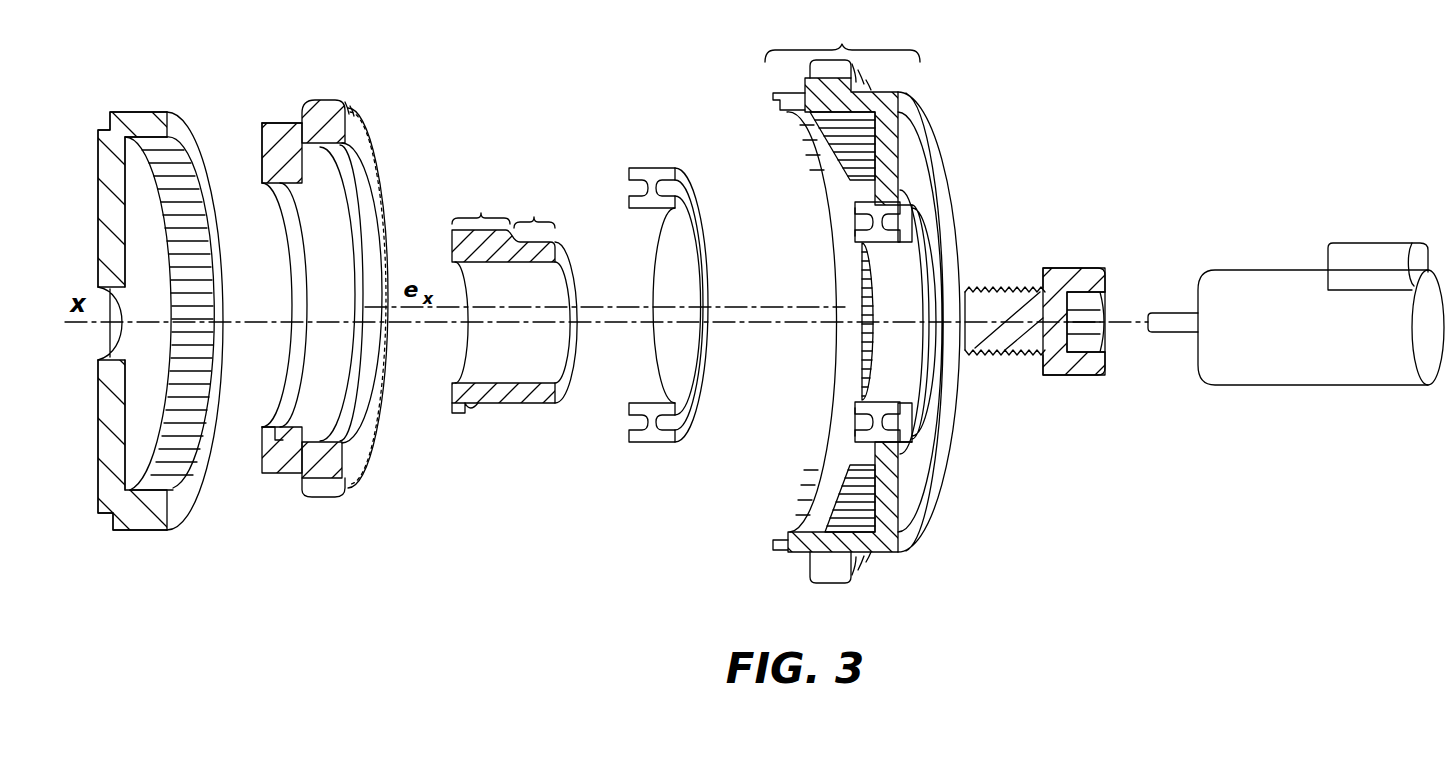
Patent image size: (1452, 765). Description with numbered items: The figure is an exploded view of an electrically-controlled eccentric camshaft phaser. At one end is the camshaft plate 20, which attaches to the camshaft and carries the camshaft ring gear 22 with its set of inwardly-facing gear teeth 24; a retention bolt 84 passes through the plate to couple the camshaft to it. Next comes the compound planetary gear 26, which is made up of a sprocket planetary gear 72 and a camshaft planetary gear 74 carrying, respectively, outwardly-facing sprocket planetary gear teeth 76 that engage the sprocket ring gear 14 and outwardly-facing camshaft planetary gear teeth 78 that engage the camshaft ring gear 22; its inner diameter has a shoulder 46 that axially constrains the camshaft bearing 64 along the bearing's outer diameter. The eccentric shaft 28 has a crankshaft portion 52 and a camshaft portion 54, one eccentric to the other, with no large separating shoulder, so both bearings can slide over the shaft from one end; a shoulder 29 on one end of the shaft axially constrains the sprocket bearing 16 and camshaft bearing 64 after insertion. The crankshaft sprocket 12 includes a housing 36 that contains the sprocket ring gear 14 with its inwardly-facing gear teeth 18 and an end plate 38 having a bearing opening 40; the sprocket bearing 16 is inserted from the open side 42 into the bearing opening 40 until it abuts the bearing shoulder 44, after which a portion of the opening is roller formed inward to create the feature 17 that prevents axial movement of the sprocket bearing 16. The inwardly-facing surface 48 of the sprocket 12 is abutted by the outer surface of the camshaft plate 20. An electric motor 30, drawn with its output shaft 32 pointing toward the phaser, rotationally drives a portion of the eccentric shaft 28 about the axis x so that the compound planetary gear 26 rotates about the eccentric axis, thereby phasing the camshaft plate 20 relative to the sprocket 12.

The crankshaft sprocket 12 is at (873, 572).
The sprocket ring gear 14 is at (838, 510).
The sprocket bearing 16 is at (857, 233).
The feature 17 is at (850, 212).
The inwardly-facing gear teeth 18 is at (858, 152).
The camshaft plate 20 is at (142, 112).
The camshaft ring gear 22 is at (189, 470).
The inwardly-facing gear teeth 24 is at (177, 185).
The compound planetary gear 26 is at (300, 106).
The eccentric shaft 28 is at (512, 208).
The shoulder 29 is at (463, 410).
The electric motor 30 is at (1312, 385).
The motor shaft 32 is at (1173, 313).
The housing 36 is at (842, 35).
The end plate 38 is at (917, 140).
The bearing opening 40 is at (883, 213).
The side 42 is at (798, 140).
The bearing shoulder 44 is at (908, 430).
The shoulder 46 is at (280, 430).
The inwardly-facing surface 48 is at (827, 140).
The crankshaft portion 52 is at (534, 207).
The camshaft portion 54 is at (481, 203).
The camshaft bearing 64 is at (652, 168).
The sprocket planetary gear 72 is at (350, 100).
The camshaft planetary gear 74 is at (266, 118).
The sprocket planetary gear teeth 76 is at (360, 127).
The camshaft planetary gear teeth 78 is at (262, 130).
The retention bolt 84 is at (1022, 329).